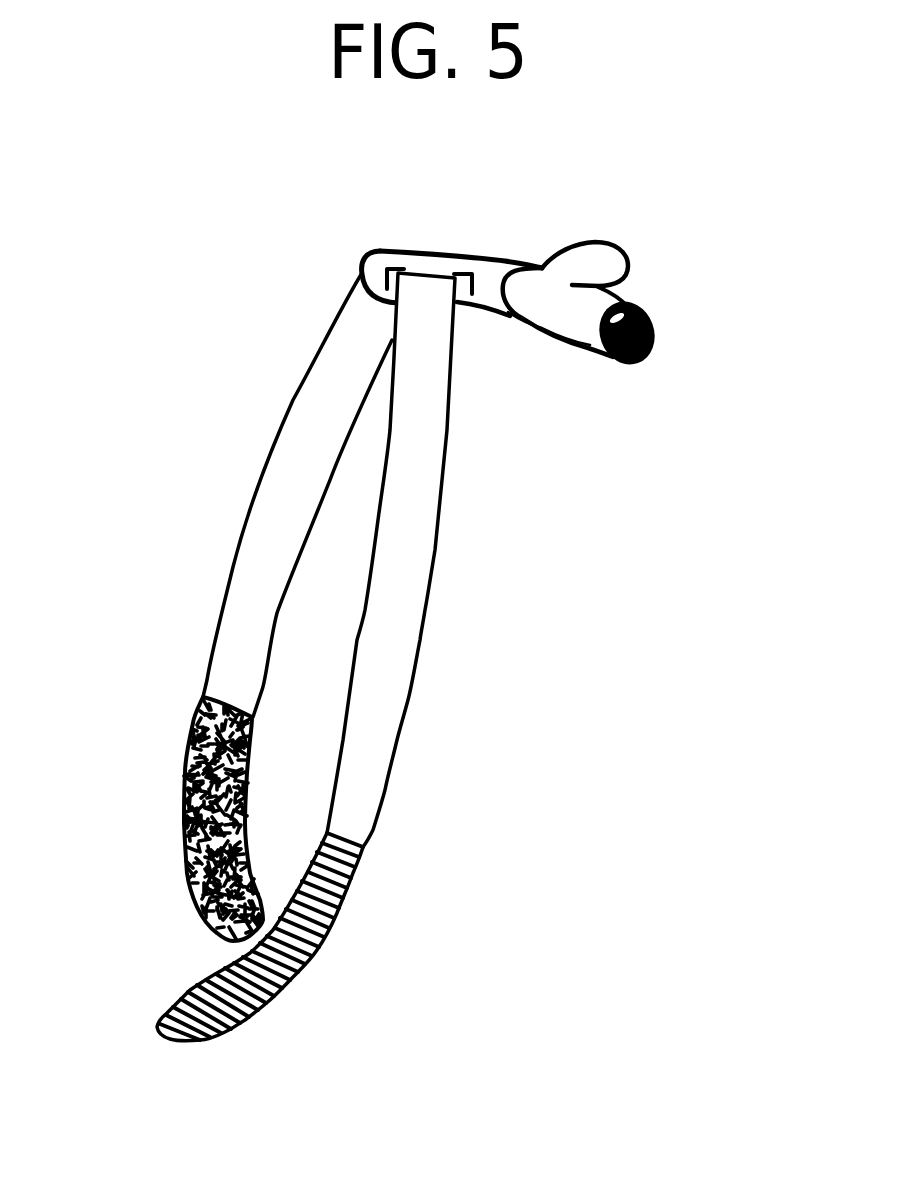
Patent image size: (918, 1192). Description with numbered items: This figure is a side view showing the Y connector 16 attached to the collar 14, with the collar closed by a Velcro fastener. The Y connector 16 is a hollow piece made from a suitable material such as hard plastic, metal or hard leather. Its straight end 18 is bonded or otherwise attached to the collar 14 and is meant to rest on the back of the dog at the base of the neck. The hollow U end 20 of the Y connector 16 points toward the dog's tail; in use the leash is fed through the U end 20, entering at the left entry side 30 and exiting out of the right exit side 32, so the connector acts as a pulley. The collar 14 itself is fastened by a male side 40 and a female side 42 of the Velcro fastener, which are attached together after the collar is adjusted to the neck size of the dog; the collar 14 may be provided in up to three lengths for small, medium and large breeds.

The collar 14 is at (403, 621).
The Y connector 16 is at (517, 318).
The straight end 18 is at (438, 263).
The hollow U end 20 is at (562, 308).
The left entry side 30 is at (653, 345).
The right exit side 32 is at (637, 260).
The male side 40 is at (183, 805).
The female side 42 is at (357, 893).